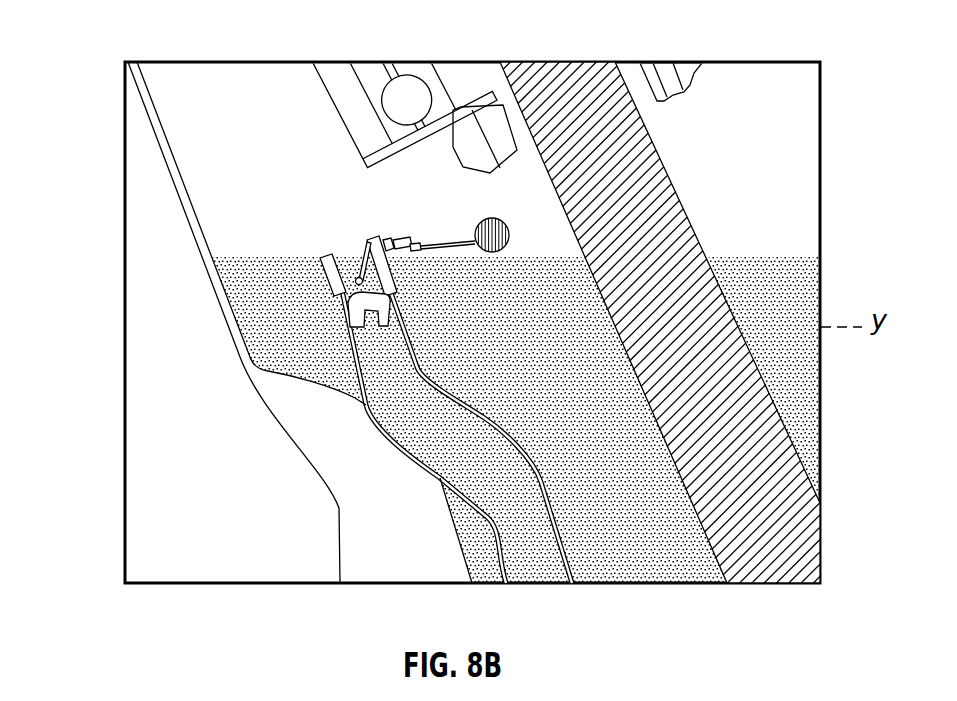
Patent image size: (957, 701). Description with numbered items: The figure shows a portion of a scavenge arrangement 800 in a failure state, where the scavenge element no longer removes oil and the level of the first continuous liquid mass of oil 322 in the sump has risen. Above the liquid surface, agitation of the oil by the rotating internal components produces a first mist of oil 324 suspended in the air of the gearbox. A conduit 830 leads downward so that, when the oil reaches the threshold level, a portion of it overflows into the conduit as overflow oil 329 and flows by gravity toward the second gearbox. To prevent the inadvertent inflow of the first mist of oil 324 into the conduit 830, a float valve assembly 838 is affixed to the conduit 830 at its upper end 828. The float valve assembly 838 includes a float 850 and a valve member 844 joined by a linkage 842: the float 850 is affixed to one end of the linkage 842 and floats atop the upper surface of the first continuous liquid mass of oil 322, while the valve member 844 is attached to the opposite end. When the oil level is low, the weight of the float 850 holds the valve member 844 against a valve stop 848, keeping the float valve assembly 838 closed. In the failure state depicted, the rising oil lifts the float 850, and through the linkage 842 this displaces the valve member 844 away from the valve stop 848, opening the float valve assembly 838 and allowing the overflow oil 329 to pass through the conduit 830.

The scavenge arrangement 800 is at (116, 21).
The first continuous liquid mass of oil 322 is at (803, 355).
The first mist of oil 324 is at (803, 200).
The overflow oil 329 is at (544, 583).
The upper end 828 is at (303, 270).
The conduit 830 is at (483, 528).
The float valve assembly 838 is at (414, 209).
The linkage 842 is at (355, 282).
The valve member 844 is at (393, 297).
The valve stop 848 is at (358, 277).
The float 850 is at (503, 254).